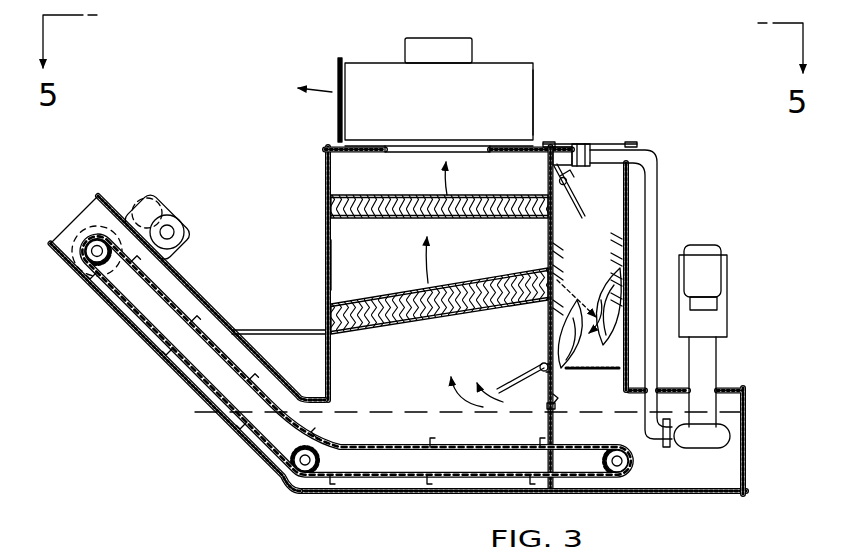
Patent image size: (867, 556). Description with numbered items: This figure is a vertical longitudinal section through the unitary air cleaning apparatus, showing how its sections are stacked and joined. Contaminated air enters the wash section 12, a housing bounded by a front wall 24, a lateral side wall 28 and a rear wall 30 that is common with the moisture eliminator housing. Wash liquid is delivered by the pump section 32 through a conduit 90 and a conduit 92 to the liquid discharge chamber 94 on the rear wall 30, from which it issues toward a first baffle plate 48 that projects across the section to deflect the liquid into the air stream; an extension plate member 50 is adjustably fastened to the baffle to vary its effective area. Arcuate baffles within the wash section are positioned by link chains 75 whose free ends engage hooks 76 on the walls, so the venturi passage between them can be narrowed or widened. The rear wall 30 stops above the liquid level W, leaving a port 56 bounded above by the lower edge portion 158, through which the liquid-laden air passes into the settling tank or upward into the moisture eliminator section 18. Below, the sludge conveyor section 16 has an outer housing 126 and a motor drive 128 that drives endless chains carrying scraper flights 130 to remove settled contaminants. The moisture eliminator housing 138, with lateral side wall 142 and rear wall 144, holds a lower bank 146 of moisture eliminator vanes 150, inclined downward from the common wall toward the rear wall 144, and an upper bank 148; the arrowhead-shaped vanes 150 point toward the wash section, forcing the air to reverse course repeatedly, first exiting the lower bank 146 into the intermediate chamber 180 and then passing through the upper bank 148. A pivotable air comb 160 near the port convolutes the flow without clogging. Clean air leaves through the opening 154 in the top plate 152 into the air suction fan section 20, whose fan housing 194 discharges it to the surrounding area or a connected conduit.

The wash section 12 is at (629, 135).
The sludge conveyor section 16 is at (182, 271).
The moisture eliminator section 18 is at (323, 235).
The air suction fan section 20 is at (501, 62).
The front wall 24 is at (630, 217).
The lateral side wall 28 is at (616, 183).
The rear wall 30 is at (553, 232).
The pump section 32 is at (728, 318).
The first baffle plate 48 is at (549, 178).
The extension plate member 50 is at (582, 200).
The port 56 is at (546, 408).
The link chains 75 is at (611, 378).
The hooks 76 is at (618, 367).
The conduit 90 is at (658, 240).
The conduit 92 is at (601, 176).
The liquid discharge chamber 94 is at (560, 158).
The outer housing 126 is at (112, 314).
The motor drive 128 is at (158, 192).
The scraper flights 130 is at (430, 440).
The housing 138 is at (320, 302).
The lateral side wall 142 is at (345, 176).
The rear wall 144 is at (326, 263).
The lower bank 146 is at (456, 310).
The upper bank 148 is at (455, 219).
The moisture eliminator vanes 150 is at (379, 194).
The top plate 152 is at (337, 145).
The opening 154 is at (388, 146).
The lower edge portion 158 is at (552, 397).
The air comb 160 is at (524, 368).
The intermediate chamber 180 is at (400, 260).
The fan housing 194 is at (515, 93).
The liquid level W is at (372, 410).